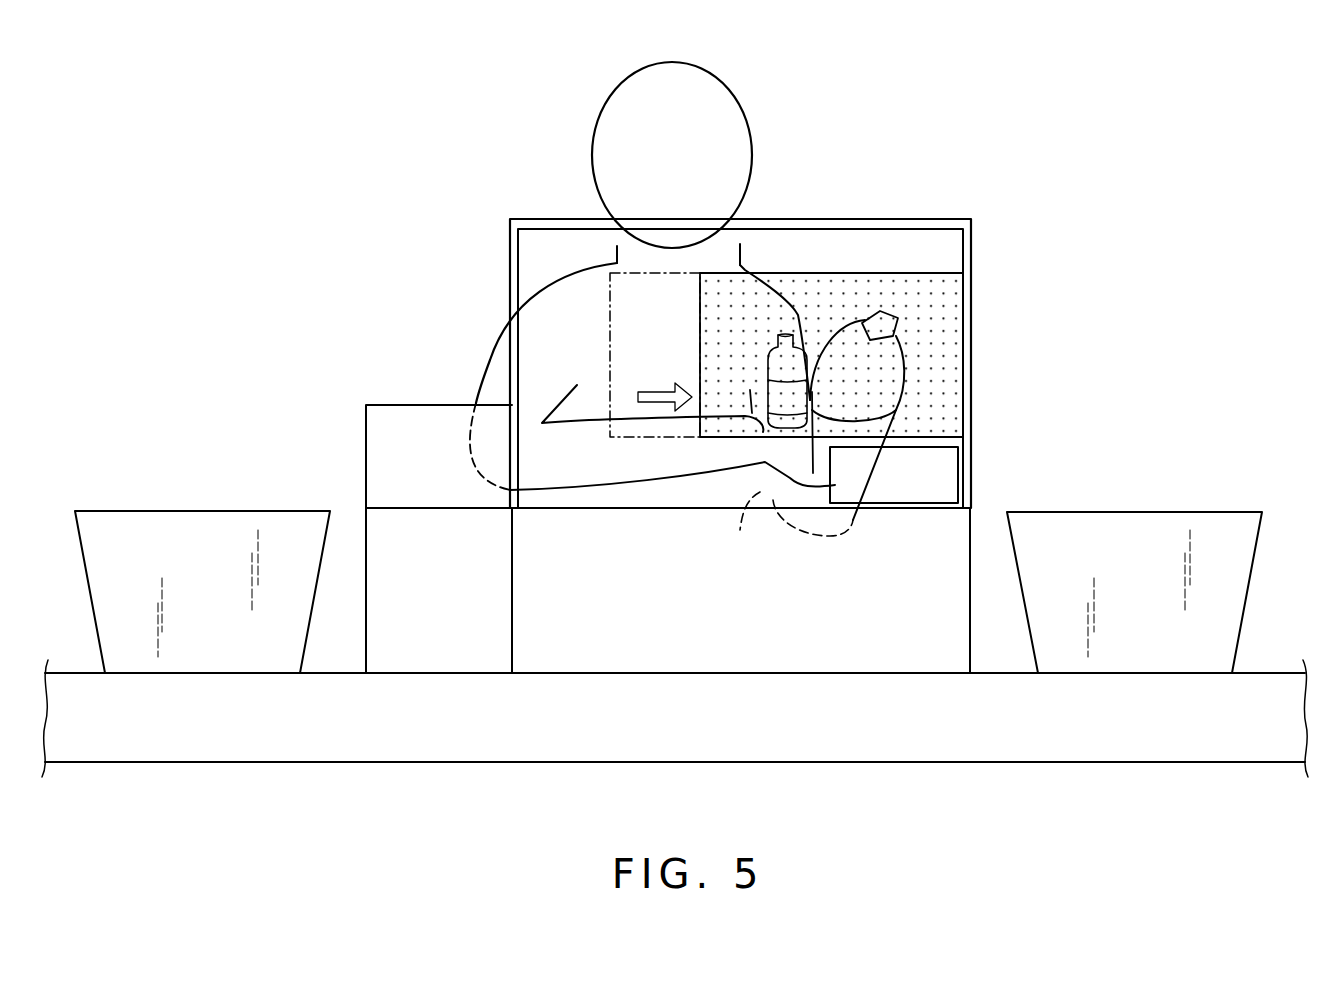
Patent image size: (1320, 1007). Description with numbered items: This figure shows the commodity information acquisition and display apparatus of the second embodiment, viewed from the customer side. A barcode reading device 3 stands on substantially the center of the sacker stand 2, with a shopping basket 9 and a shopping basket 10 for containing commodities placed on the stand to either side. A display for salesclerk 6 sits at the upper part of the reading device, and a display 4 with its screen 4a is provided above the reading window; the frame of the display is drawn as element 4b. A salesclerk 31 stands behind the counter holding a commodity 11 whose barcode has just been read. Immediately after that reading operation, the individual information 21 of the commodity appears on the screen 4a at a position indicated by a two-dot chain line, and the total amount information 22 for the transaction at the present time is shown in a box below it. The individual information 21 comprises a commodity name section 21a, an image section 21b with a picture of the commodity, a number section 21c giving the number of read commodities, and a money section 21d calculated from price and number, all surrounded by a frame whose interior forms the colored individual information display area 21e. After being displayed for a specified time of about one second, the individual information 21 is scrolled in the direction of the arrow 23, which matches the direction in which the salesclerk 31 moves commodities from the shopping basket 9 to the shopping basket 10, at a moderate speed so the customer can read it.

The sacker stand 2 is at (1270, 684).
The barcode reading device 3 is at (912, 655).
The display 4 is at (723, 306).
The screen 4a is at (740, 326).
The display frame 4b is at (500, 245).
The display for salesclerk 6 is at (385, 415).
The shopping basket 9 is at (203, 510).
The shopping basket 10 is at (1170, 512).
The commodity 11 is at (760, 490).
The individual information 21 is at (732, 306).
The commodity name section 21a is at (718, 300).
The image section 21b is at (765, 370).
The number section 21c is at (925, 333).
The money section 21d is at (908, 386).
The individual information display area 21e is at (890, 272).
The total amount information 22 is at (938, 448).
The arrow 23 is at (658, 395).
The salesclerk 31 is at (725, 79).